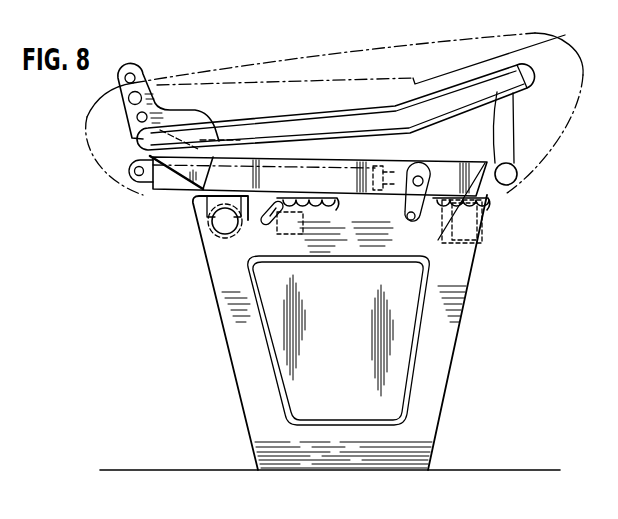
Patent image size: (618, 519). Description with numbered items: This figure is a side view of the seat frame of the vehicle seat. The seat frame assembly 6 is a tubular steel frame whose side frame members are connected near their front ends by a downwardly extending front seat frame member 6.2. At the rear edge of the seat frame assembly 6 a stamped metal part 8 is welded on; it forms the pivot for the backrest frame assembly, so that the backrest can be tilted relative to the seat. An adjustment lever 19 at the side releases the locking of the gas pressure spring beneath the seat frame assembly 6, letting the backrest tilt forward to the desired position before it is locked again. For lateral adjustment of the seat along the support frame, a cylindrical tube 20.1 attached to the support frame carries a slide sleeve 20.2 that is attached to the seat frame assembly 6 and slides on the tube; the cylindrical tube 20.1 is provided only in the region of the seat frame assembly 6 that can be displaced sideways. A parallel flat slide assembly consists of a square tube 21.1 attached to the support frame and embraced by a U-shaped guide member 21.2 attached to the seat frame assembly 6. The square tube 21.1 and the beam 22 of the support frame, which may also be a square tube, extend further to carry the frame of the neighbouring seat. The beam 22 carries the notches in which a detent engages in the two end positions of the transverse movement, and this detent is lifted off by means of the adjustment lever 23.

The seat frame assembly 6 is at (532, 33).
The front seat frame member 6.2 is at (514, 186).
The stamped metal part 8 is at (138, 78).
The adjustment lever 19 is at (439, 214).
The cylindrical tube 20.1 is at (222, 230).
The slide sleeve 20.2 is at (210, 227).
The square tube 21.1 is at (475, 227).
The U-shaped guide member 21.2 is at (482, 250).
The beam 22 is at (297, 222).
The adjustment lever 23 is at (278, 207).